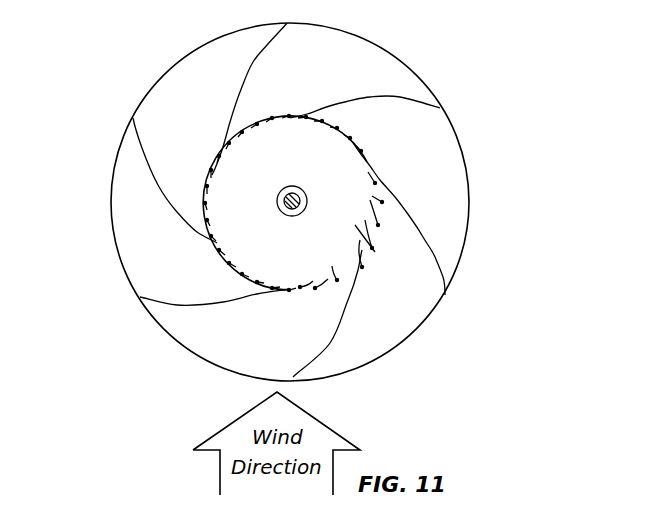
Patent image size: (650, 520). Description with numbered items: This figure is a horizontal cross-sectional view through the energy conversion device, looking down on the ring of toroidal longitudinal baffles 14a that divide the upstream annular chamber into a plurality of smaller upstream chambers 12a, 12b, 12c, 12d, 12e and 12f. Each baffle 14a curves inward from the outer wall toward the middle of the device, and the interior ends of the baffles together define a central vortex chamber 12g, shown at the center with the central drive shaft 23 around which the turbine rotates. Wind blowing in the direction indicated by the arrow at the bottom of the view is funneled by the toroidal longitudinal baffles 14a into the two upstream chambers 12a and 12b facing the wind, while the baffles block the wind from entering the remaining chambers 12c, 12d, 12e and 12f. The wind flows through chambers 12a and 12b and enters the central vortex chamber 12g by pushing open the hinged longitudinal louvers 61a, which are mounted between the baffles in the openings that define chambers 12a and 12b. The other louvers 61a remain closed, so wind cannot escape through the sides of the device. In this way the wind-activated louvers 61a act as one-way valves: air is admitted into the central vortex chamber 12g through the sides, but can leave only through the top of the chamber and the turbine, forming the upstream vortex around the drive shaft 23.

The upstream chamber 12a is at (230, 343).
The upstream chamber 12b is at (398, 307).
The upstream chamber 12c is at (440, 183).
The upstream chamber 12d is at (350, 57).
The upstream chamber 12e is at (177, 103).
The upstream chamber 12f is at (145, 242).
The central vortex chamber 12g is at (378, 245).
The toroidal longitudinal baffle 14a is at (257, 50).
The central drive shaft 23 is at (297, 191).
The hinged longitudinal louver 61a is at (308, 287).